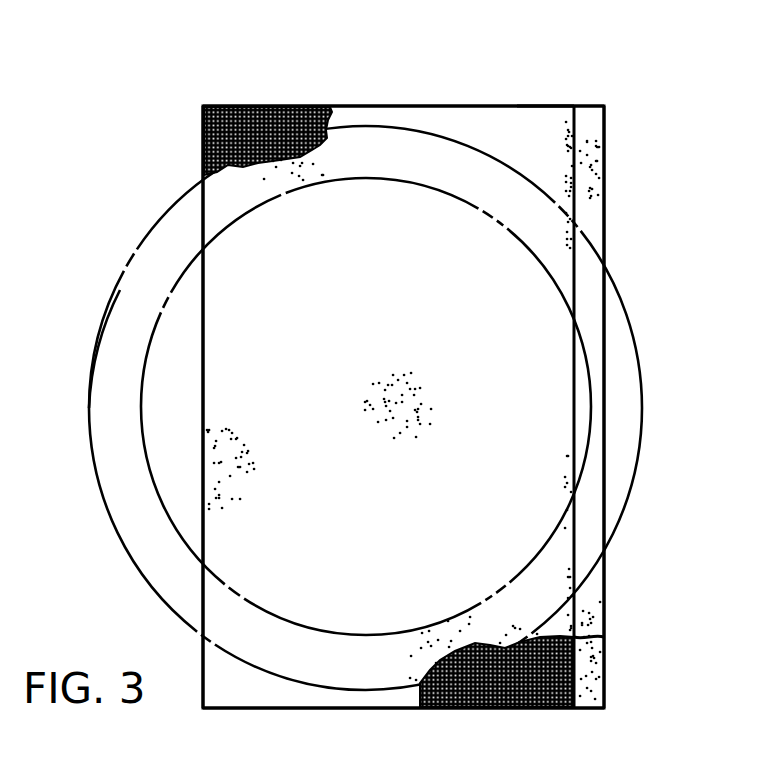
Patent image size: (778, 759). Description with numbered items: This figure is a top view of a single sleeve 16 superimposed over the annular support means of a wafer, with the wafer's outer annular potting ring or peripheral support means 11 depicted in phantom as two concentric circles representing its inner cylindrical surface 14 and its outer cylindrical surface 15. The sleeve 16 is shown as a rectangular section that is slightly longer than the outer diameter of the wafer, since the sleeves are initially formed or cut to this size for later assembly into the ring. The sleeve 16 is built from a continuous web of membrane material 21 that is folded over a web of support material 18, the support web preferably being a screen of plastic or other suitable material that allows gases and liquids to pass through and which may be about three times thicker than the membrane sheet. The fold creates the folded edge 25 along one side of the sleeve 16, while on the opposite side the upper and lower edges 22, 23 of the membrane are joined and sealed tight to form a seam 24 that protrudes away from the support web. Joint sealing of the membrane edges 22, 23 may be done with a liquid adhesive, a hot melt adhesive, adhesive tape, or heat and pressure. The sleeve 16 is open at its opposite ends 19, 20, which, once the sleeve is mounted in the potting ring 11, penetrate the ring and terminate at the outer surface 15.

The peripheral support means 11 is at (636, 469).
The inner cylindrical surface 14 is at (166, 301).
The outer cylindrical surface 15 is at (101, 498).
The sleeve 16 is at (482, 107).
The support material 18 is at (280, 106).
The end 19 is at (335, 709).
The end 20 is at (410, 105).
The membrane material 21 is at (518, 118).
The upper edge 22 is at (600, 587).
The lower edge 23 is at (600, 683).
The seam 24 is at (593, 657).
The folded edge 25 is at (201, 116).